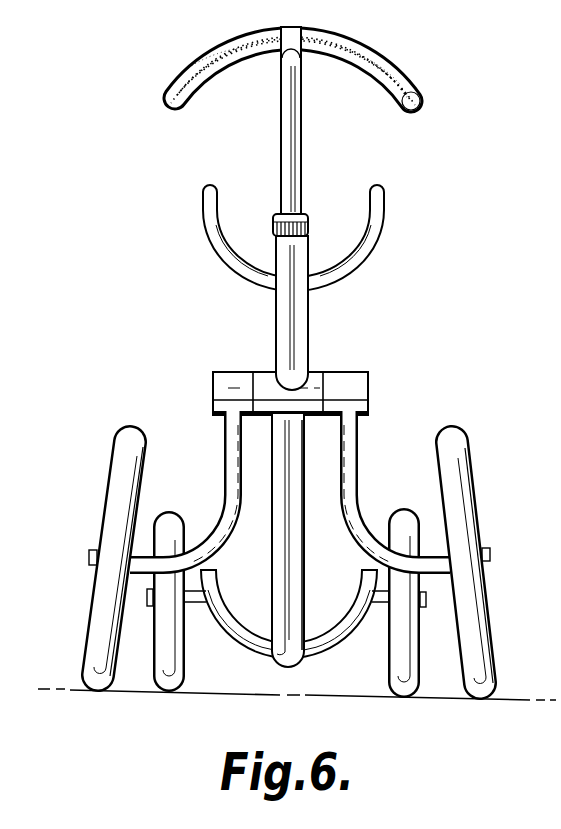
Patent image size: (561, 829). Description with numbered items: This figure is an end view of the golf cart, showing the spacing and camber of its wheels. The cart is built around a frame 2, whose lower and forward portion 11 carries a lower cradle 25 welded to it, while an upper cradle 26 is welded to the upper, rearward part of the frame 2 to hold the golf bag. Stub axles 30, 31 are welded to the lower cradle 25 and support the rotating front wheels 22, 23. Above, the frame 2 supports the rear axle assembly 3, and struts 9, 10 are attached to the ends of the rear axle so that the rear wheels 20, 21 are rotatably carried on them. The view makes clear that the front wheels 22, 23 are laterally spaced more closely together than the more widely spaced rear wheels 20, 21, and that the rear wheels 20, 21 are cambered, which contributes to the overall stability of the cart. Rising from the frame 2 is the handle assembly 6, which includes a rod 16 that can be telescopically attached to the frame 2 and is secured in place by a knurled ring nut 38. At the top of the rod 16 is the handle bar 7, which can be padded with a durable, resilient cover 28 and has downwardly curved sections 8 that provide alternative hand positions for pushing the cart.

The frame 2 is at (287, 208).
The rear axle assembly 3 is at (372, 409).
The handle assembly 6 is at (376, 50).
The handle bar 7 is at (411, 82).
The downwardly curved sections 8 is at (419, 108).
The strut 9 is at (356, 478).
The strut 10 is at (226, 459).
The lower and forward portion 11 is at (272, 558).
The rod 16 is at (281, 140).
The rear wheel 20 is at (480, 500).
The rear wheel 21 is at (113, 445).
The front wheel 22 is at (410, 700).
The front wheel 23 is at (165, 694).
The lower cradle 25 is at (368, 572).
The upper cradle 26 is at (384, 246).
The cover 28 is at (188, 66).
The stub axle 30 is at (203, 604).
The stub axle 31 is at (375, 604).
The knurled ring nut 38 is at (306, 218).